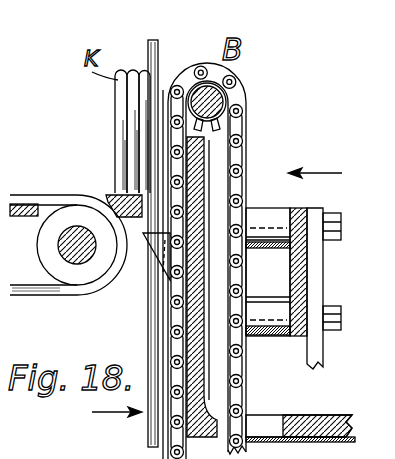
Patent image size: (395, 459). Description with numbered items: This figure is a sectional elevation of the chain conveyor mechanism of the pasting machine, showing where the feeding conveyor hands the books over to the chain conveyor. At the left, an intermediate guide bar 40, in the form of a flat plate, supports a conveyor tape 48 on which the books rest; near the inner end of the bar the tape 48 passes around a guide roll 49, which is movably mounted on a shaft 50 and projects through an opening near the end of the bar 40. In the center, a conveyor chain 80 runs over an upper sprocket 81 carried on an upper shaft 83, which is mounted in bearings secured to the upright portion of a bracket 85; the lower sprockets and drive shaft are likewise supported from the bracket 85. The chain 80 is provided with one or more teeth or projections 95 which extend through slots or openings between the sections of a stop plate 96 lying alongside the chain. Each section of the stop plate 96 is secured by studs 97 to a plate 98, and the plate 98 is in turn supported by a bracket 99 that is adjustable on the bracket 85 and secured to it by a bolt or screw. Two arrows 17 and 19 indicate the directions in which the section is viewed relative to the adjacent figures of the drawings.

The direction arrow 17 is at (315, 164).
The direction arrow 19 is at (117, 428).
The guide bar 40 is at (21, 223).
The conveyor tape 48 is at (25, 195).
The guide roll 49 is at (71, 282).
The shaft 50 is at (84, 256).
The conveyor chain 80 is at (240, 148).
The upper sprocket 81 is at (236, 124).
The upper shaft 83 is at (222, 96).
The bracket 85 is at (300, 421).
The tooth or projection 95 is at (166, 252).
The stop plate 96 is at (160, 52).
The stud 97 is at (272, 210).
The plate 98 is at (293, 268).
The bracket 99 is at (323, 278).